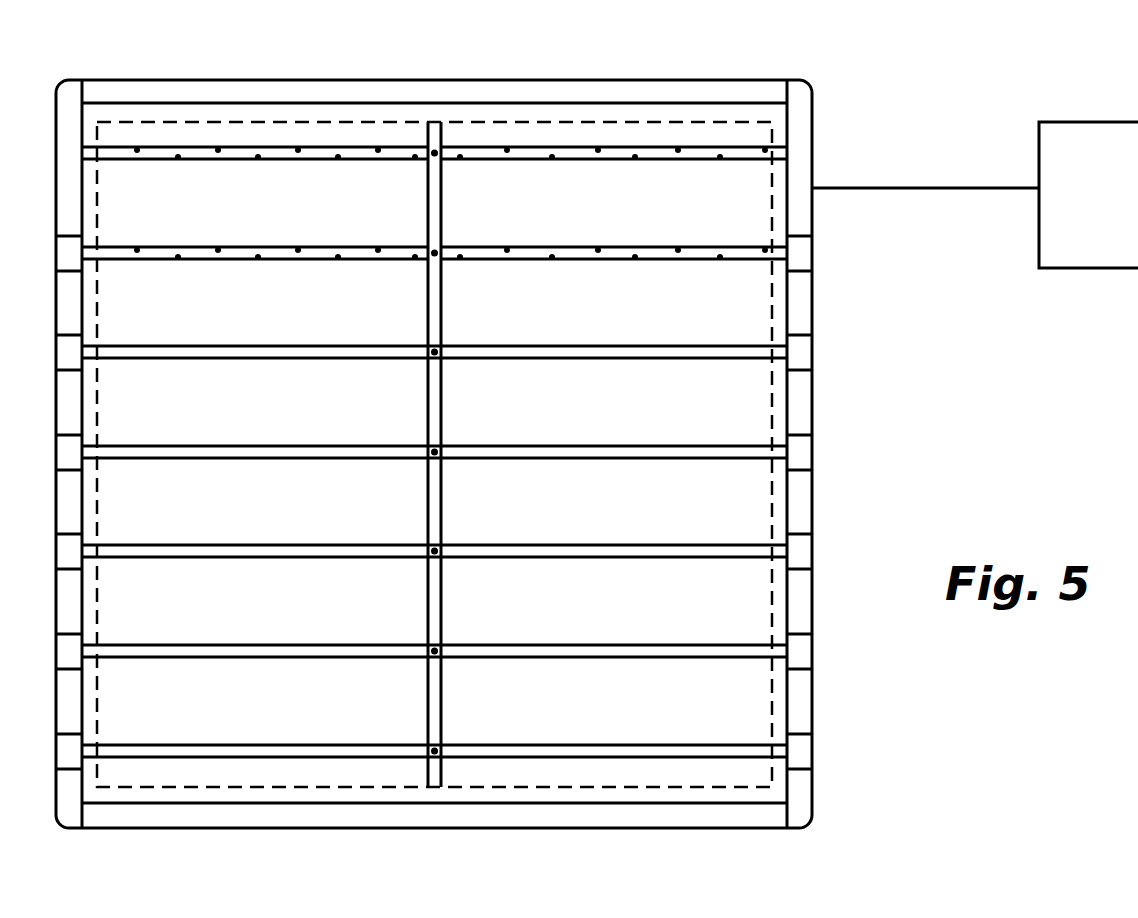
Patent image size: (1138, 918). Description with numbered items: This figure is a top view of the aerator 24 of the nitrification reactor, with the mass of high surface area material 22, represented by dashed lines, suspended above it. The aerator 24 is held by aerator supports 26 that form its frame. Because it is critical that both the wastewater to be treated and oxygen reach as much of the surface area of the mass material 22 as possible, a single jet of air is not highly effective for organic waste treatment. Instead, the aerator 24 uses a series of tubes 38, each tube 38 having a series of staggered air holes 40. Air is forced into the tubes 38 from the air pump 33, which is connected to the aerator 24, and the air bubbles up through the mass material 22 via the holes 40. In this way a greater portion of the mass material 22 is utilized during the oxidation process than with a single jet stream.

The mass of high surface area material 22 is at (774, 294).
The aerator 24 is at (841, 121).
The aerator supports 26 is at (238, 84).
The pump 33 is at (1122, 214).
The tubes 38 is at (245, 163).
The staggered air holes 40 is at (638, 158).